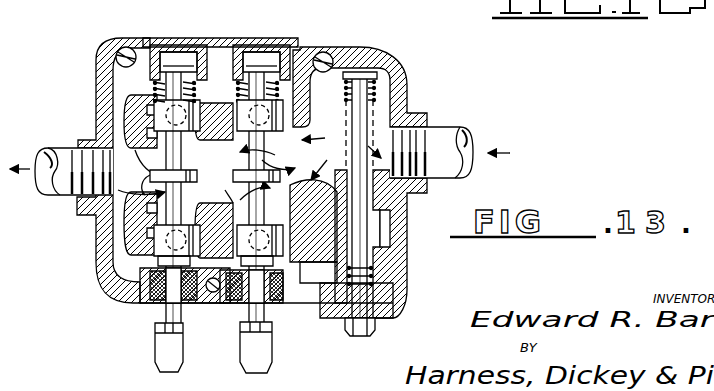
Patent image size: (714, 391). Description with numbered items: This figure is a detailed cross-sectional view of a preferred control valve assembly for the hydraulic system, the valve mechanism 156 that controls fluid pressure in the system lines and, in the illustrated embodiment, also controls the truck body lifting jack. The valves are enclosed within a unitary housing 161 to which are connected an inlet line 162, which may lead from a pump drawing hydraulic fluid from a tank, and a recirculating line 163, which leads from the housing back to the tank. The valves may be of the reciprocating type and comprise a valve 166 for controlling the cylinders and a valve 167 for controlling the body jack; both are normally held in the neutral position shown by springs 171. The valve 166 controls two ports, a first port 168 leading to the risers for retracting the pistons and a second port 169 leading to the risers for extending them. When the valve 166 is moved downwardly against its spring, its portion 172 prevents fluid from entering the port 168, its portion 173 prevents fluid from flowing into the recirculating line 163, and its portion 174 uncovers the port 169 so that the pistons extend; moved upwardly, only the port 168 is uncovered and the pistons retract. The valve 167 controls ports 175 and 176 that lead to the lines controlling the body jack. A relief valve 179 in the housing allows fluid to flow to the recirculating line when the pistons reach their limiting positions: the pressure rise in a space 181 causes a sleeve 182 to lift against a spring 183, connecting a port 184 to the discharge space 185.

The valve mechanism 156 is at (362, 44).
The unitary housing 161 is at (385, 80).
The inlet line 162 is at (449, 127).
The recirculating line 163 is at (67, 150).
The valve 166 is at (165, 311).
The valve 167 is at (213, 347).
The port 168 is at (113, 86).
The port 169 is at (120, 253).
The springs 171 is at (145, 62).
The portion of the valve 172 is at (157, 123).
The portion of the valve 173 is at (215, 168).
The portion of the valve 174 is at (113, 286).
The port 175 is at (300, 104).
The port 176 is at (278, 250).
The relief valve 179 is at (402, 273).
The space 181 is at (400, 296).
The sleeve 182 is at (413, 212).
The spring 183 is at (378, 96).
The port 184 is at (274, 300).
The discharge space 185 is at (190, 306).